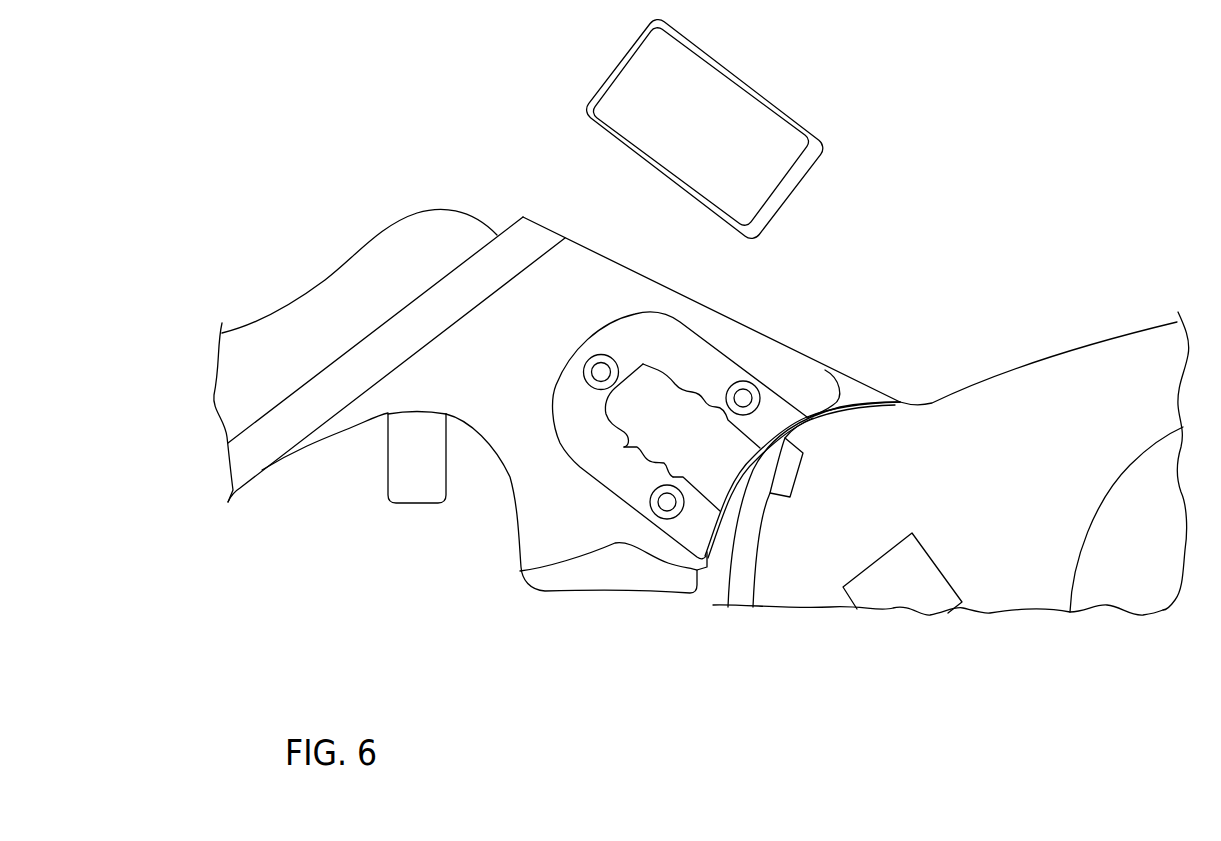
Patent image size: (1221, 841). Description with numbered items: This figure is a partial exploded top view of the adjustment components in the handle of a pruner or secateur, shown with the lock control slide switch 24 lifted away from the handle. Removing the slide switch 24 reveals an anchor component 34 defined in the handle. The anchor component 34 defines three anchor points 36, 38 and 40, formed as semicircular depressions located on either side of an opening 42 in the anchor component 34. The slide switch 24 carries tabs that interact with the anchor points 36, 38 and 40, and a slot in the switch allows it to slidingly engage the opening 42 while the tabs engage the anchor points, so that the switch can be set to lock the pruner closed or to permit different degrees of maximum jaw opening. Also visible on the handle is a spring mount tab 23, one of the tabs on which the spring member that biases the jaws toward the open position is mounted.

The spring mount tab 23 is at (405, 467).
The slide switch 24 is at (715, 82).
The anchor component 34 is at (633, 330).
The anchor point 36 is at (680, 378).
The anchor point 38 is at (697, 387).
The anchor point 40 is at (739, 400).
The opening 42 is at (627, 443).